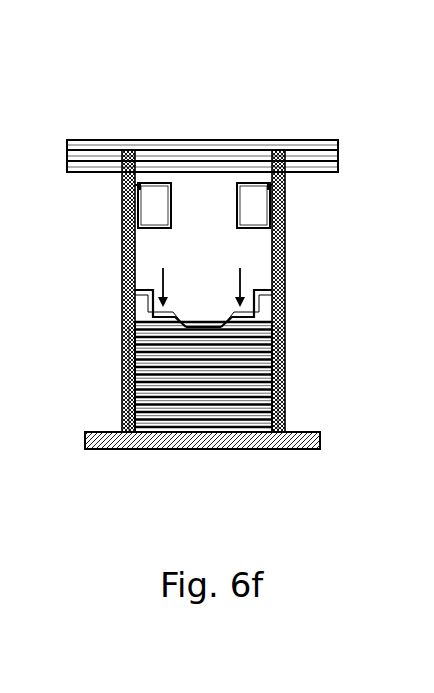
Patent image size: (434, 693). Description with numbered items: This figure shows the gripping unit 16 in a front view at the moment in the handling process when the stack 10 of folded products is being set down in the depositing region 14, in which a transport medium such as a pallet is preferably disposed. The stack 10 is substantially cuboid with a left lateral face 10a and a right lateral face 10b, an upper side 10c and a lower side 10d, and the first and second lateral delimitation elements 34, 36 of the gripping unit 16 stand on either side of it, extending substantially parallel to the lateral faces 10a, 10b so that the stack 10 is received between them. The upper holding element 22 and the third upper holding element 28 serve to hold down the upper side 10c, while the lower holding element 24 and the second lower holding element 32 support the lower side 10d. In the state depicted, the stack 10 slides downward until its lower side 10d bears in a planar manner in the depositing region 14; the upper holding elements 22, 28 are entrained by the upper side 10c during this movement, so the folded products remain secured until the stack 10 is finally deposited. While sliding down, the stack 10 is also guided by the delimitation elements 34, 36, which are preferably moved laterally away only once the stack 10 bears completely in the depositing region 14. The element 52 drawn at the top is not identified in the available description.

The stack 10 is at (284, 360).
The left lateral face 10a is at (130, 375).
The right lateral face 10b is at (284, 332).
The upper side 10c is at (196, 327).
The lower side 10d is at (207, 434).
The depositing region 14 is at (158, 470).
The gripping unit 16 is at (305, 128).
The upper holding element 22 is at (140, 322).
The lower holding element 24 is at (130, 415).
The third upper holding element 28 is at (283, 304).
The second lower holding element 32 is at (284, 400).
The first lateral delimitation element 34 is at (130, 240).
The second lateral delimitation element 36 is at (284, 228).
The cross bar 52 is at (93, 139).